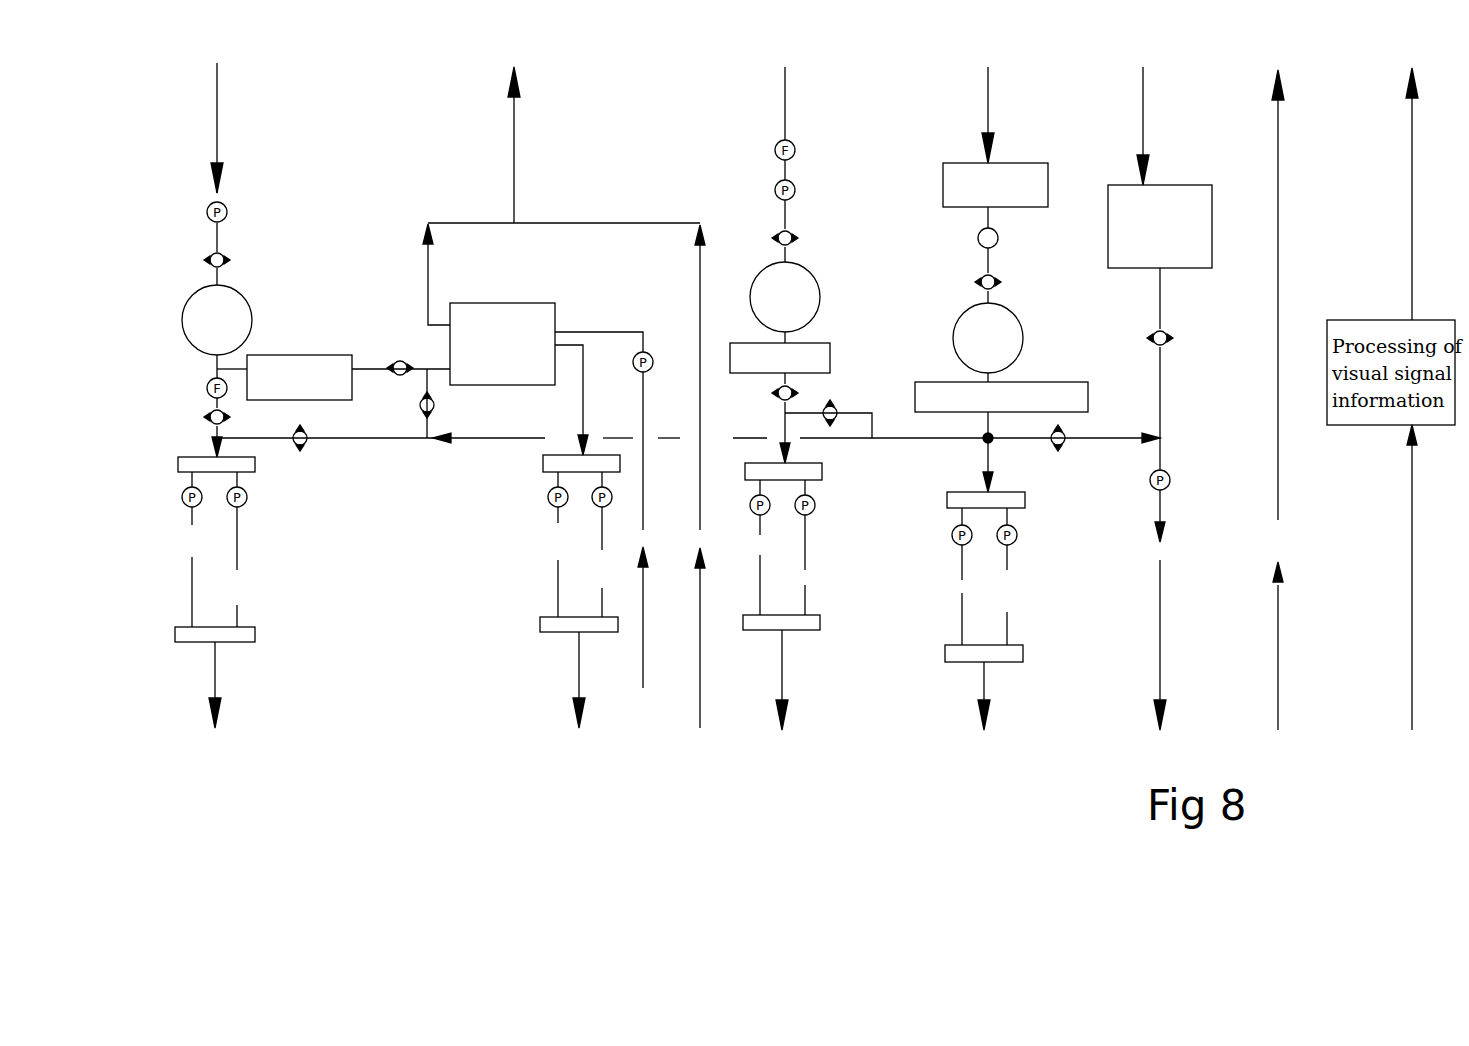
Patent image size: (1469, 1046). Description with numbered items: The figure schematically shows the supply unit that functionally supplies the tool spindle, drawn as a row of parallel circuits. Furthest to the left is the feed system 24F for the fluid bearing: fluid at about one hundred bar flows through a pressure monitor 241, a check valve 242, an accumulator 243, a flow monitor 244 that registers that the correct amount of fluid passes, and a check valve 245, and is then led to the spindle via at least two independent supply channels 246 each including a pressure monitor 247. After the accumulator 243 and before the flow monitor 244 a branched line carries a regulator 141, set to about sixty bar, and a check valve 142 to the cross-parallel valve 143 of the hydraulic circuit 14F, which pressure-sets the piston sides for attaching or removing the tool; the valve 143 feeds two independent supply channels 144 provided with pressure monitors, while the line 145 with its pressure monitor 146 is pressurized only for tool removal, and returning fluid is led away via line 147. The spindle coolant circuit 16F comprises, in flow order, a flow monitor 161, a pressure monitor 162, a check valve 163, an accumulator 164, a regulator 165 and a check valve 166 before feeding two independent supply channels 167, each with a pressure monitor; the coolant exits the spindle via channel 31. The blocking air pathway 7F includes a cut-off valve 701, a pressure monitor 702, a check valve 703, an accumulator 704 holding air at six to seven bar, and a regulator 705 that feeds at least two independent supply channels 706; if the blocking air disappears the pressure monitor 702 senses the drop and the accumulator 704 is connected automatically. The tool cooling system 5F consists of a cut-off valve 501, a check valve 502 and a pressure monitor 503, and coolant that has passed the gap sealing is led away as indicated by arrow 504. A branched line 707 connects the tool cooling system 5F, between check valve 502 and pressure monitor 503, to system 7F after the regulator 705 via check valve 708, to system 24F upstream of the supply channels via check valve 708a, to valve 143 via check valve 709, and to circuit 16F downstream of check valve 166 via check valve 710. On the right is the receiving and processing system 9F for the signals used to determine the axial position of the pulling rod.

The feed system 24F is at (242, 128).
The pressure monitor 241 is at (242, 212).
The check valve 242 is at (244, 260).
The accumulator 243 is at (217, 320).
The flow monitor 244 is at (187, 388).
The check valve 245 is at (190, 420).
The supply channels 246 is at (213, 592).
The pressure monitor 247 is at (240, 501).
The regulator 141 is at (299, 377).
The check valve 142 is at (401, 352).
The cross-parallel valve 143 is at (502, 344).
The supply channels 144 is at (579, 591).
The line 145 is at (636, 547).
The pressure monitor 146 is at (623, 351).
The line 147 is at (537, 145).
The hydraulic circuit 14F is at (562, 94).
The channel 31 is at (566, 463).
The branched line 707 is at (688, 425).
The check valve 708 is at (1050, 451).
The check valve 708a is at (325, 451).
The check valve 709 is at (398, 403).
The check valve 710 is at (845, 396).
The circuit 16F is at (820, 103).
The flow monitor 161 is at (809, 149).
The pressure monitor 162 is at (809, 189).
The check valve 163 is at (809, 237).
The accumulator 164 is at (785, 297).
The regulator 165 is at (780, 358).
The check valve 166 is at (755, 392).
The supply channels 167 is at (783, 596).
The blocking air pathway 7F is at (1012, 115).
The cut-off valve 701 is at (995, 185).
The pressure monitor 702 is at (1013, 237).
The check valve 703 is at (1014, 282).
The accumulator 704 is at (988, 338).
The regulator 705 is at (1001, 397).
The supply channels 706 is at (985, 611).
The tool cooling system 5F is at (1167, 126).
The cut-off valve 501 is at (1160, 226).
The check valve 502 is at (1182, 337).
The pressure monitor 503 is at (1184, 597).
The arrow 504 is at (1304, 400).
The receiving and processing system 9F is at (1434, 194).